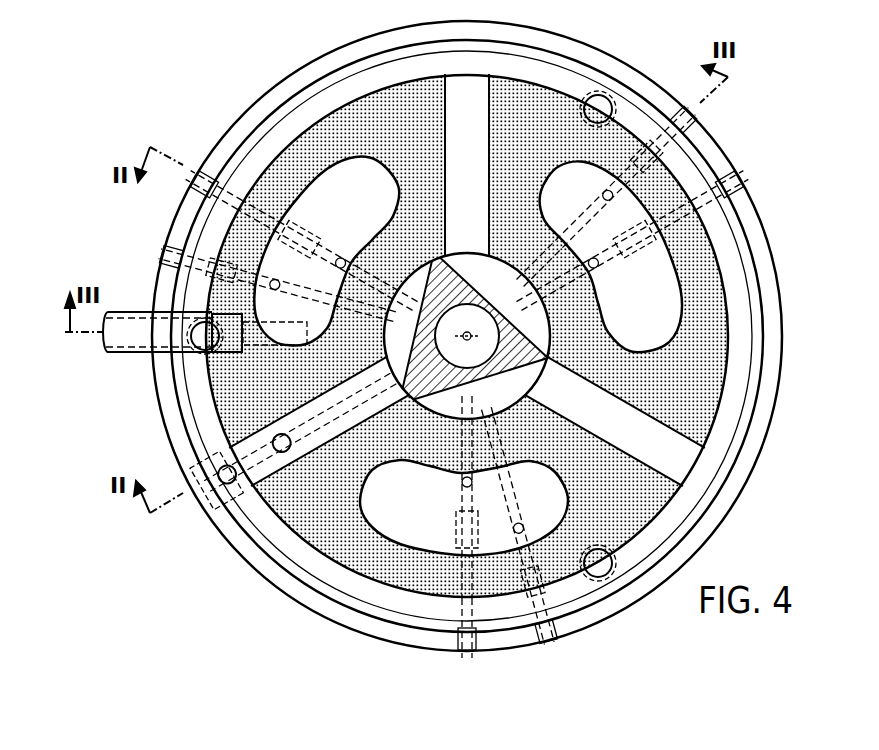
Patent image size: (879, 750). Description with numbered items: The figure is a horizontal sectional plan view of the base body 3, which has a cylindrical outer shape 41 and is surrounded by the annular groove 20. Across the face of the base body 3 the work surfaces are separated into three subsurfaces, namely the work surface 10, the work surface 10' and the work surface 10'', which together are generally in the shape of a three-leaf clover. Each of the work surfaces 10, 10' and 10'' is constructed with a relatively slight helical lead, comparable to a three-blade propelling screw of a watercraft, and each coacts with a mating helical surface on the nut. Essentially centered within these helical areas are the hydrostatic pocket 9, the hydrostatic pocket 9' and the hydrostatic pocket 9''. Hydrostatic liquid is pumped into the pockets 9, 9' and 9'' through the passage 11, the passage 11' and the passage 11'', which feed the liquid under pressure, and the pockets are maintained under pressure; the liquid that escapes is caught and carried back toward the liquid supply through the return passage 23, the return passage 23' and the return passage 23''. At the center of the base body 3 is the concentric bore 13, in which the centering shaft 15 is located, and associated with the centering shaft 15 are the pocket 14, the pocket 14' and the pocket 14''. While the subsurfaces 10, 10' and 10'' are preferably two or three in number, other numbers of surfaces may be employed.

The base body 3 is at (757, 428).
The hydrostatic pocket 9 is at (320, 204).
The hydrostatic pocket 9' is at (660, 253).
The hydrostatic pocket 9'' is at (442, 565).
The work surface 10 is at (336, 237).
The work surface 10' is at (643, 271).
The work surface 10'' is at (467, 507).
The passage 11 is at (277, 285).
The passage 11' is at (638, 197).
The passage 11'' is at (518, 525).
The concentric bore 13 is at (430, 404).
The pocket 14 is at (308, 240).
The pocket 14' is at (632, 241).
The pocket 14'' is at (508, 497).
The centering shaft 15 is at (540, 338).
The annular groove 20 is at (728, 472).
The passage 23 is at (205, 365).
The passage 23' is at (607, 71).
The passage 23'' is at (611, 600).
The cylindrical outer shape 41 is at (472, 658).